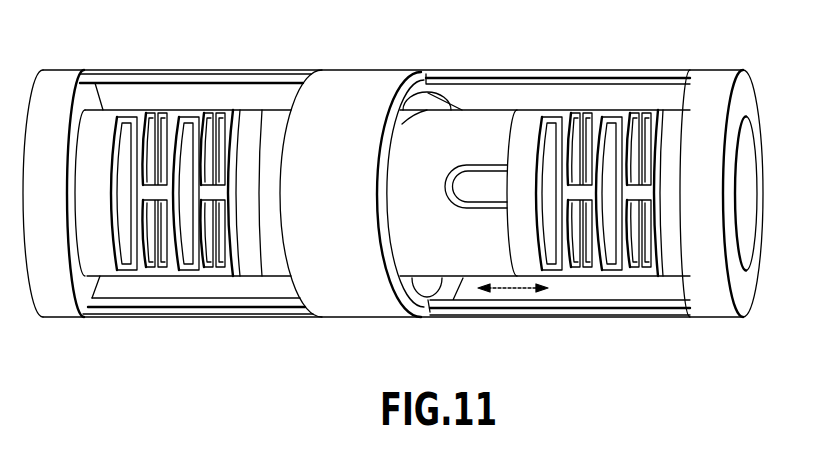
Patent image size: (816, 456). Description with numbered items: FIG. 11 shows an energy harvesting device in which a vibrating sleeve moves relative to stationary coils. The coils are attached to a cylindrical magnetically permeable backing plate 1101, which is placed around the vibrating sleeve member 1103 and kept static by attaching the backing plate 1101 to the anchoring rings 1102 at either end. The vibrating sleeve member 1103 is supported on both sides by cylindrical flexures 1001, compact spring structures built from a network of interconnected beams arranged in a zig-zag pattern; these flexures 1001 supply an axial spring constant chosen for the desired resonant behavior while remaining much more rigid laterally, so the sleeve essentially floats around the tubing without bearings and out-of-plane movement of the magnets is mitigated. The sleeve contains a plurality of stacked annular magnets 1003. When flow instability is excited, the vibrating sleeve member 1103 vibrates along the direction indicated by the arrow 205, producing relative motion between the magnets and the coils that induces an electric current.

The anchoring ring 1102 is at (58, 307).
The cylindrical magnetically permeable backing plate 1101 is at (355, 317).
The vibrating sleeve member 1103 is at (498, 120).
The stacked annular magnets 1003 is at (440, 110).
The cylindrical flexures 1001 is at (158, 120).
The axial movement direction arrow 205 is at (512, 290).